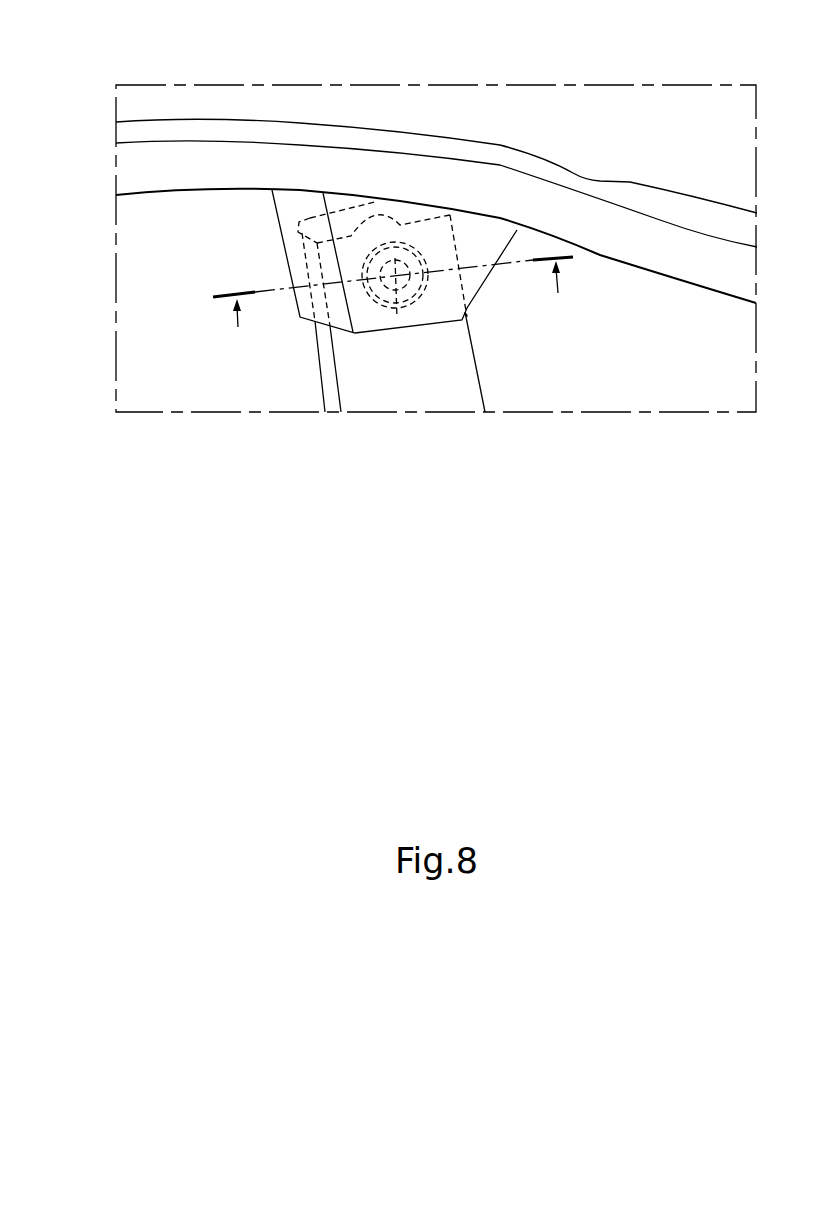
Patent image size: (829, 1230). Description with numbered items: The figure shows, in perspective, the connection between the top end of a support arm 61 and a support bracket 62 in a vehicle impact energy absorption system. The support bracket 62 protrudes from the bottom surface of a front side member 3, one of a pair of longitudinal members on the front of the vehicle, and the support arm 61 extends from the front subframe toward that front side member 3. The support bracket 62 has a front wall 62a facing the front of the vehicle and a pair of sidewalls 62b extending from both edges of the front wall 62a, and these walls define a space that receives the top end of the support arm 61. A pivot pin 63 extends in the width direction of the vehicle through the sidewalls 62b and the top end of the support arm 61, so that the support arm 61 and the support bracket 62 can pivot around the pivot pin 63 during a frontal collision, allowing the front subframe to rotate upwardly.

The front side member 3 is at (397, 113).
The support arm 61 is at (368, 393).
The support bracket 62 is at (260, 264).
The front wall 62a is at (297, 220).
The sidewall 62b is at (482, 240).
The pivot pin 63 is at (397, 318).